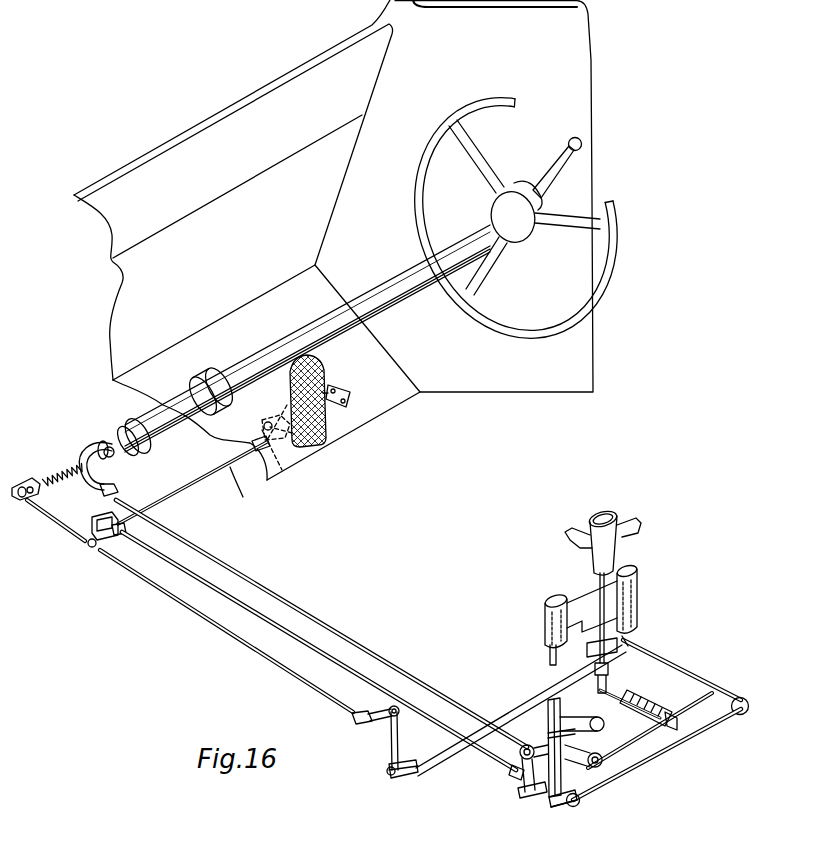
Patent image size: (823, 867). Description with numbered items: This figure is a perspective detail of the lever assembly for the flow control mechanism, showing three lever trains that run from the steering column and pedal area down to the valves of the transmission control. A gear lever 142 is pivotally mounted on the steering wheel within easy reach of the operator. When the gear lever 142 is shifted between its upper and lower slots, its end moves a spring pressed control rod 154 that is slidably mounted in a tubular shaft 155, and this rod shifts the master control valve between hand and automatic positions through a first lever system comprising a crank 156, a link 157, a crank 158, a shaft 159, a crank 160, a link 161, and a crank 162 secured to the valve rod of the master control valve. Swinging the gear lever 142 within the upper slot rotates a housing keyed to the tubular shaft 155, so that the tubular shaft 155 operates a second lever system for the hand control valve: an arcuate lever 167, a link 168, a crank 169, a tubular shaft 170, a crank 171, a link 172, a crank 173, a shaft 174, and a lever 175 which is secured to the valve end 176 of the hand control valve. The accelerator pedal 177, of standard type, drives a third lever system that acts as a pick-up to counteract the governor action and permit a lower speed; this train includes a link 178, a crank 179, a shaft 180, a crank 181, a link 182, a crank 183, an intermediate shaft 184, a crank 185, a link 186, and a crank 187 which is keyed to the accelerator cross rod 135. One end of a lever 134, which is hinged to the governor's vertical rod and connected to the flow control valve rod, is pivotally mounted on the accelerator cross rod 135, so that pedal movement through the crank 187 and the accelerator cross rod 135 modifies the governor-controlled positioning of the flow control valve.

The gear lever 142 is at (556, 172).
The accelerator pedal 177 is at (324, 369).
The link 178 is at (288, 382).
The crank 179 is at (290, 464).
The shaft 180 is at (232, 470).
The tubular shaft 155 is at (108, 448).
The arcuate lever 167 is at (105, 470).
The spring pressed control rod 154 is at (54, 481).
The crank 156 is at (20, 486).
The link 157 is at (147, 587).
The crank 181 is at (92, 529).
The link 182 is at (200, 585).
The link 168 is at (268, 586).
The crank 158 is at (376, 721).
The shaft 159 is at (392, 758).
The crank 160 is at (408, 781).
The link 161 is at (518, 710).
The lever 175 is at (687, 676).
The shaft 174 is at (647, 761).
The crank 162 is at (643, 645).
The accelerator cross rod 135 is at (645, 737).
The lever 134 is at (655, 722).
The valve end 176 is at (632, 630).
The crank 185 is at (612, 693).
The crank 171 is at (548, 732).
The crank 183 is at (529, 765).
The link 172 is at (549, 718).
The tubular shaft 170 is at (563, 742).
The intermediate shaft 184 is at (604, 724).
The link 186 is at (577, 740).
The crank 187 is at (596, 766).
The crank 169 is at (548, 795).
The crank 173 is at (559, 803).